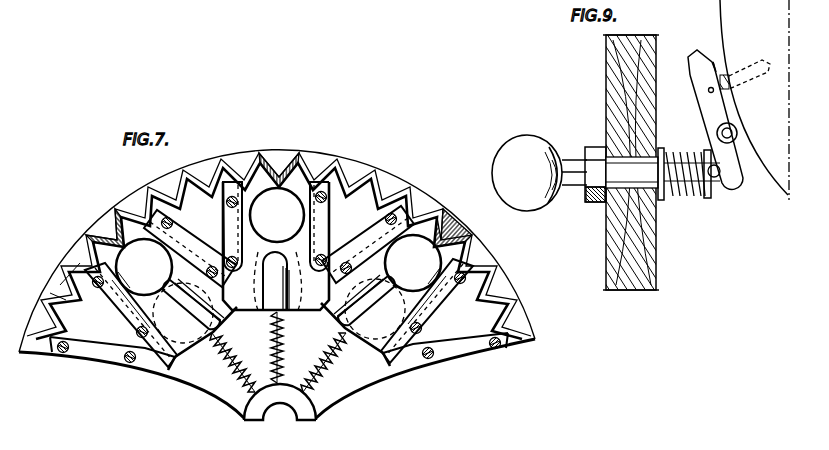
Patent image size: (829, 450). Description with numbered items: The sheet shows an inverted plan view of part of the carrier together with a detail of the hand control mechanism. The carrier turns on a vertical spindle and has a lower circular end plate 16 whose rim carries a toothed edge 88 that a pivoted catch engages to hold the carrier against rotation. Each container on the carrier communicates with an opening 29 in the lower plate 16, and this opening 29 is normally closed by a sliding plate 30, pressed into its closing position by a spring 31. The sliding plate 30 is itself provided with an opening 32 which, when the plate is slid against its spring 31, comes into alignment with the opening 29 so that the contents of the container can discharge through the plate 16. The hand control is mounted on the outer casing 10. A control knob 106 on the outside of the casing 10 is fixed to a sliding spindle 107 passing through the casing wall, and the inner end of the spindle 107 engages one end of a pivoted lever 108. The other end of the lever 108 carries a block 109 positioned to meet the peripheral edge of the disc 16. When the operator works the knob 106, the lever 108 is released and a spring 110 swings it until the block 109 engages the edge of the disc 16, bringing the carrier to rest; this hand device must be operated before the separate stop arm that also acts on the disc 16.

In FIG. 9, the outer casing 10 is at (618, 91).
In FIG. 7, the lower end plate 16 is at (347, 372).
In FIG. 9, the lower end plate 16 is at (752, 148).
In FIG. 7, the opening 29 is at (258, 256).
In FIG. 7, the sliding plate 30 is at (133, 232).
In FIG. 7, the spring 31 is at (272, 342).
In FIG. 7, the opening 32 is at (121, 246).
In FIG. 7, the toothed edge 88 is at (62, 287).
In FIG. 9, the control knob 106 is at (606, 173).
In FIG. 9, the sliding spindle 107 is at (717, 178).
In FIG. 9, the pivoted lever 108 is at (715, 108).
In FIG. 9, the block 109 is at (716, 68).
In FIG. 9, the spring 110 is at (729, 79).